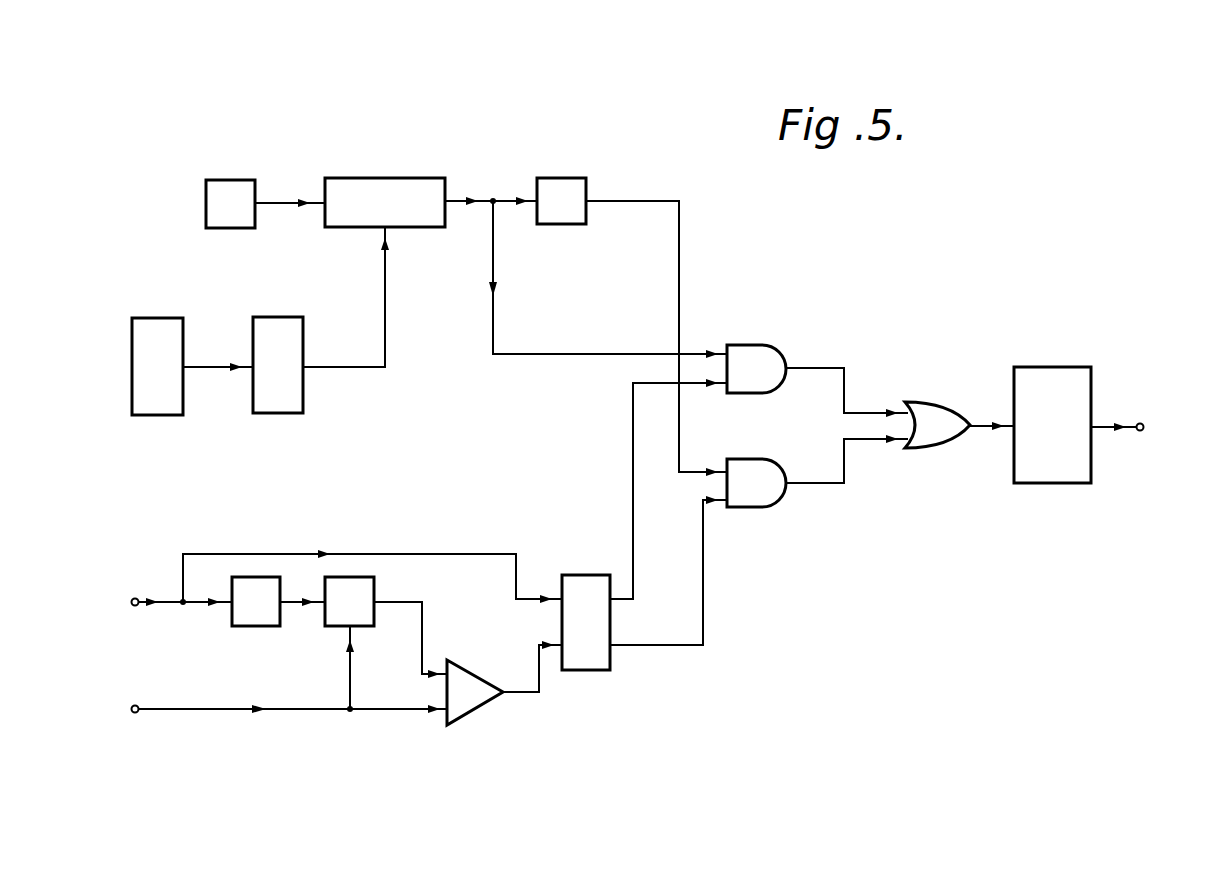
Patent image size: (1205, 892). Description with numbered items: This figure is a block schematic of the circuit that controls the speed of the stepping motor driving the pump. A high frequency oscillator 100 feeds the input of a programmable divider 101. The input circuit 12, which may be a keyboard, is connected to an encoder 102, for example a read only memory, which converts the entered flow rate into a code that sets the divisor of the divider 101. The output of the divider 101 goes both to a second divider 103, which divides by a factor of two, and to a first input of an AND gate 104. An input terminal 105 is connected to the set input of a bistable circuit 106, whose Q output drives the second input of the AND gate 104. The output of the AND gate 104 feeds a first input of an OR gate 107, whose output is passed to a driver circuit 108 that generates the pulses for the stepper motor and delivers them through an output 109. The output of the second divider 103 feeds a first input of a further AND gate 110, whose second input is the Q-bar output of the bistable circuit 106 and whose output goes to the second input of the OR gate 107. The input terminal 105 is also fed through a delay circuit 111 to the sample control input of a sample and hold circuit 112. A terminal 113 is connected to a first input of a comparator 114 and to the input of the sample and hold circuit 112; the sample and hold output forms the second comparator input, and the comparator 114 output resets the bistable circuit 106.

The input circuit 12 is at (170, 381).
The high frequency oscillator 100 is at (233, 190).
The programmable divider 101 is at (404, 216).
The encoder 102 is at (297, 381).
The second divider 103 is at (565, 190).
The AND gate 104 is at (758, 352).
The input terminal 105 is at (323, 584).
The bistable circuit 106 is at (605, 634).
The OR gate 107 is at (927, 410).
The driver circuit 108 is at (1072, 441).
The output 109 is at (1145, 424).
The AND gate 110 is at (763, 503).
The delay circuit 111 is at (273, 615).
The sample and hold circuit 112 is at (366, 615).
The terminal 113 is at (265, 675).
The comparator 114 is at (472, 680).